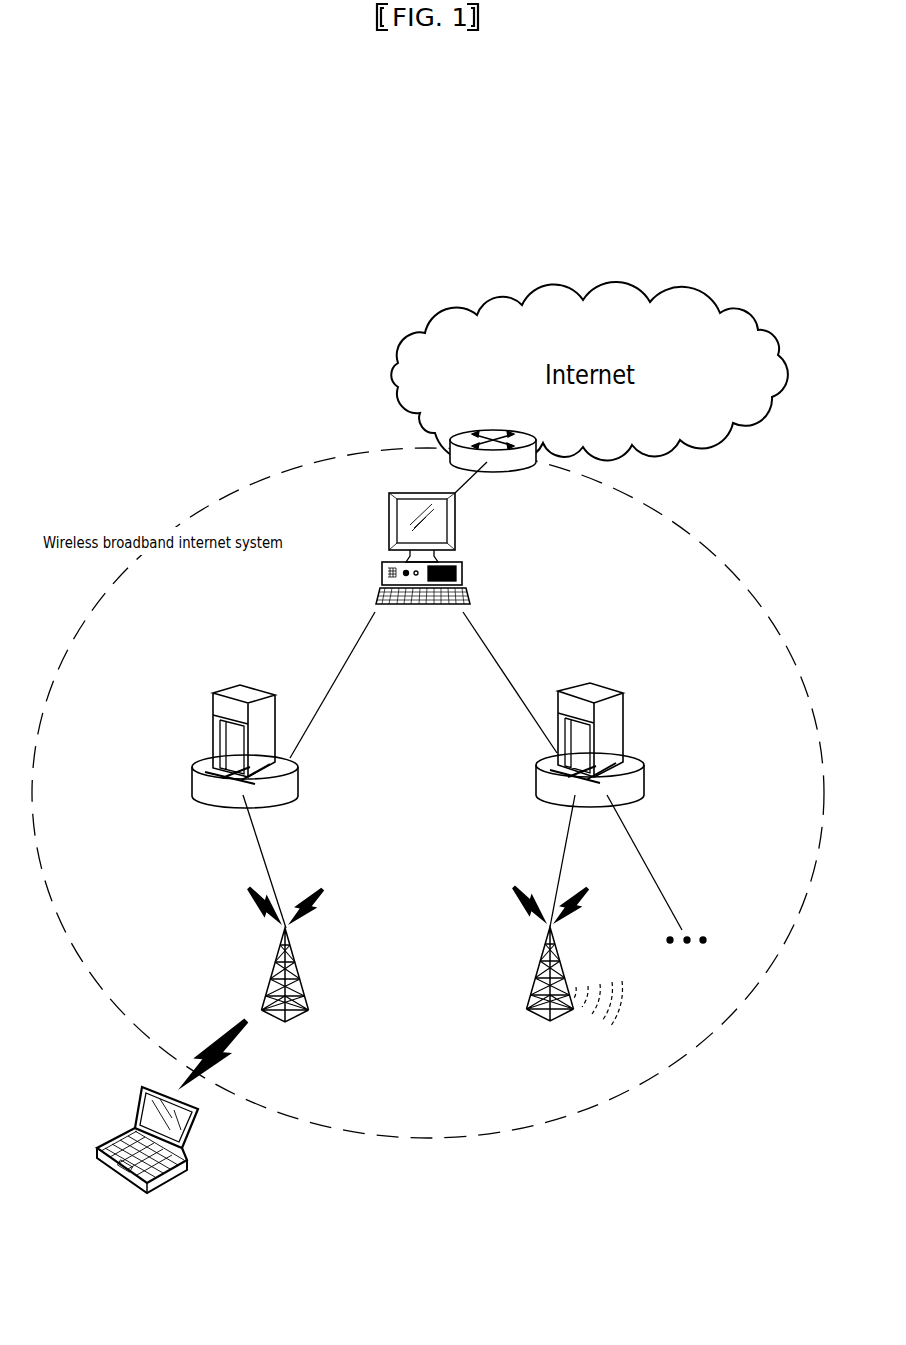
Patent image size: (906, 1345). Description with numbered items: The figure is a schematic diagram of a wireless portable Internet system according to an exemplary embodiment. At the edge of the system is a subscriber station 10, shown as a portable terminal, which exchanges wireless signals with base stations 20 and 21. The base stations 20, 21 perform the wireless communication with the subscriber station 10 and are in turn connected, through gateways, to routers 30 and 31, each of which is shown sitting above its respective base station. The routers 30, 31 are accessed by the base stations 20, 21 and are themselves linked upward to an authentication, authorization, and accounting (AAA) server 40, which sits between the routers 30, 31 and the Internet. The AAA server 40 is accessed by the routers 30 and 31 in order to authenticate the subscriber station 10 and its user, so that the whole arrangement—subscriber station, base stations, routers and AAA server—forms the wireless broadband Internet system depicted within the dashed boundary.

The subscriber station 10 is at (196, 1132).
The base station 20 is at (303, 976).
The base station 21 is at (533, 975).
The router 30 is at (208, 737).
The router 31 is at (628, 731).
The authentication, authorization, and accounting (AAA) server 40 is at (456, 520).